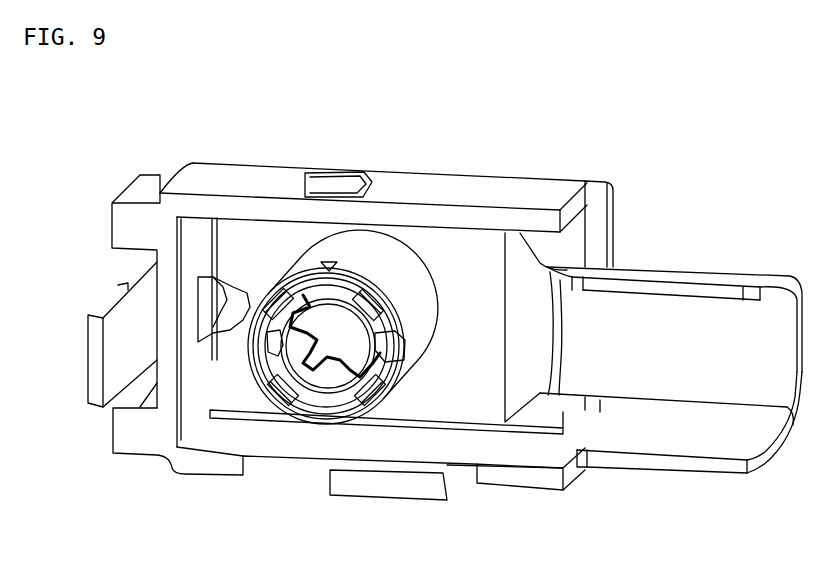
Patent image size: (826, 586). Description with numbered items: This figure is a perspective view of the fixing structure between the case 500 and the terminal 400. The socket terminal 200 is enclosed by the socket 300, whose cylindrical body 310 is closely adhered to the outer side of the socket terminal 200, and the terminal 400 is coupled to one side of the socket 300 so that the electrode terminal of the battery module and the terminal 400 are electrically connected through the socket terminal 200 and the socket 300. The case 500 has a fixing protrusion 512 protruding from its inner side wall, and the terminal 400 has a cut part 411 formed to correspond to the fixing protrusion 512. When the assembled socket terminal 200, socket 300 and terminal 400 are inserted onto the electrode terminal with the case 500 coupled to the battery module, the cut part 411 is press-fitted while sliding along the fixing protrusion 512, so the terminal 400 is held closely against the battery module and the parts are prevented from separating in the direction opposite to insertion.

The socket terminal 200 is at (311, 410).
The socket 300 is at (373, 246).
The cylindrical body 310 is at (320, 250).
The terminal 400 is at (672, 265).
The cut part 411 is at (216, 272).
The case 500 is at (537, 162).
The fixing protrusion 512 is at (213, 307).